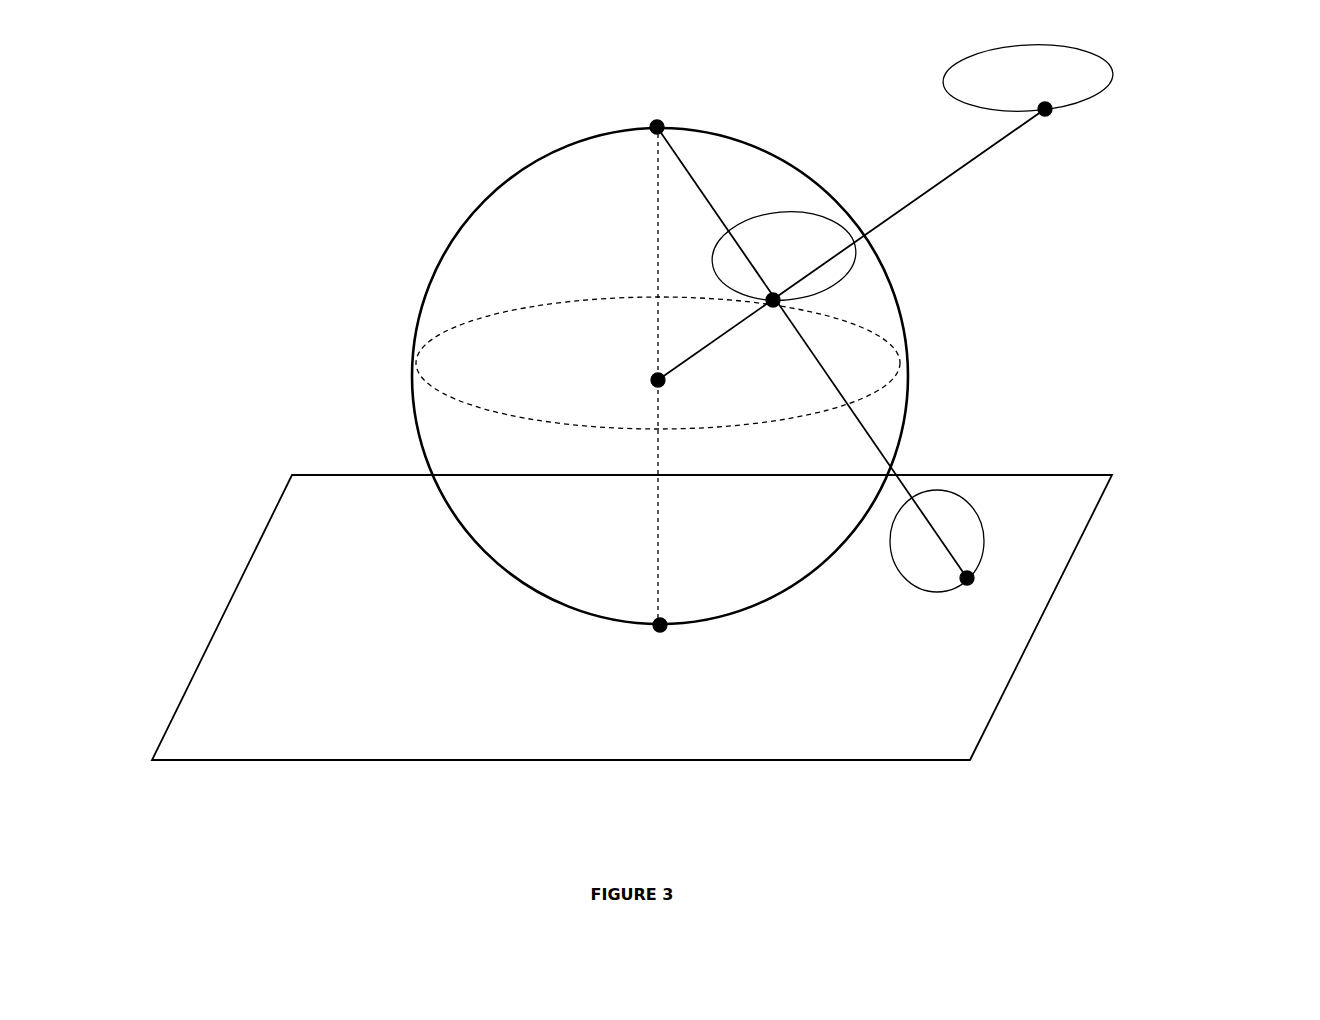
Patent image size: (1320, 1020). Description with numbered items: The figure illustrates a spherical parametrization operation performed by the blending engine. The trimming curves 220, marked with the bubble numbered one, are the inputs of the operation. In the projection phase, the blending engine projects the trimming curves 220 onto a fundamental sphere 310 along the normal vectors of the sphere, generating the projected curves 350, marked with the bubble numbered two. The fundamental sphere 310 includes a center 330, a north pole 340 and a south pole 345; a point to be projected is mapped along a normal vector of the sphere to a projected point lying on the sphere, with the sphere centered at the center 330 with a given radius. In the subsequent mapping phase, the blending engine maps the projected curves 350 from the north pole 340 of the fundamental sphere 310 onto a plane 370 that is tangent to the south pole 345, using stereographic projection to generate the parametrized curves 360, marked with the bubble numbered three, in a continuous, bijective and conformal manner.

The fundamental sphere 310 is at (437, 262).
The plane 370 is at (413, 703).
The north pole 340 is at (656, 123).
The south pole 345 is at (661, 632).
The center 330 is at (650, 381).
The projected curves 350 is at (853, 265).
The trimming curves 220 is at (1112, 80).
The parametrized curves 360 is at (948, 595).